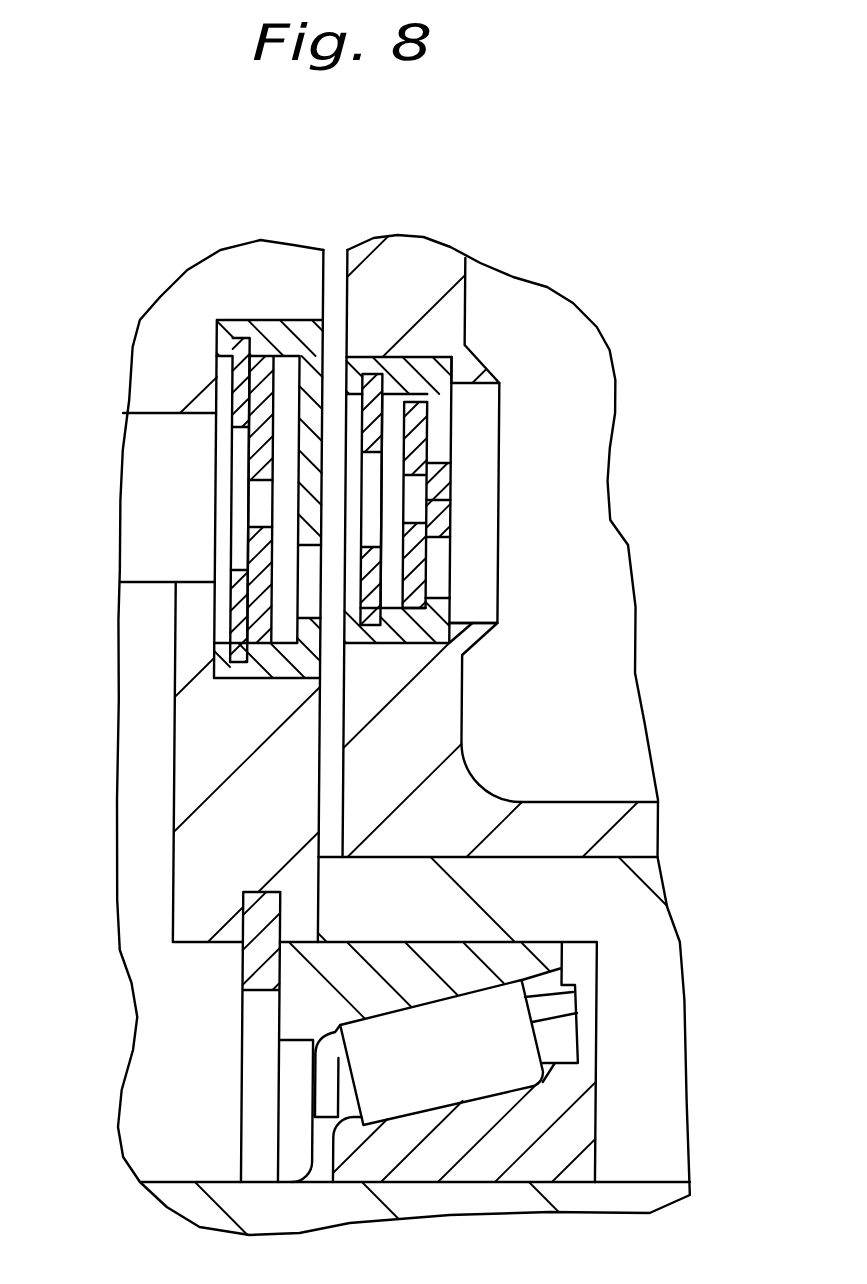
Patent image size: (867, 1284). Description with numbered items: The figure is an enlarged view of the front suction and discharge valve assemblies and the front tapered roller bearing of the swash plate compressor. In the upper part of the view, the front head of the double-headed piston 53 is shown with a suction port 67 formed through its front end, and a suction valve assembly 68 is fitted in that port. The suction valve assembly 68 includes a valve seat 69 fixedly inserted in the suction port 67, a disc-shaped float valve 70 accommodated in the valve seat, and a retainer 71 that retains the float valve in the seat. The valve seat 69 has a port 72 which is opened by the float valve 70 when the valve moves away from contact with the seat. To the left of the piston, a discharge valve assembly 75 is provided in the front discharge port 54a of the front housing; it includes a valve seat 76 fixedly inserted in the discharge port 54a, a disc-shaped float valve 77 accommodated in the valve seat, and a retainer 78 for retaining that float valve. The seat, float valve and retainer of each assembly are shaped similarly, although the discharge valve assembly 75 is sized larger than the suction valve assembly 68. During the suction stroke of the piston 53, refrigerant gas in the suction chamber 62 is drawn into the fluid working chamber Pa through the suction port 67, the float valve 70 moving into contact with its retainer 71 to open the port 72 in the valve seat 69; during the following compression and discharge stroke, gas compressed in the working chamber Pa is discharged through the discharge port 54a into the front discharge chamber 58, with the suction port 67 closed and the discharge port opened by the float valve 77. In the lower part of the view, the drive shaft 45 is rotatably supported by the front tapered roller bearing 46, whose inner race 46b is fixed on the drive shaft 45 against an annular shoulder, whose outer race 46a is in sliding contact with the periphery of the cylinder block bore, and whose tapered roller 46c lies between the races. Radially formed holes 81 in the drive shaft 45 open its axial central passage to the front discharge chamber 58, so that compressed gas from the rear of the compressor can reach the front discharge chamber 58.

The fluid working chamber Pa is at (335, 262).
The discharge valve assembly 75 is at (245, 322).
The valve seat 76 is at (220, 337).
The retainer 78 is at (237, 382).
The discharge port 54a is at (245, 465).
The float valve 77 is at (260, 633).
The suction valve assembly 68 is at (446, 357).
The suction port 67 is at (485, 408).
The float valve 70 is at (401, 613).
The retainer 71 is at (378, 640).
The valve seat 69 is at (441, 508).
The port 72 is at (440, 440).
The suction chamber 62 is at (574, 748).
The double-headed piston 53 is at (664, 829).
The front discharge chamber 58 is at (202, 1126).
The outer race 46a is at (298, 1018).
The front tapered roller bearing 46 is at (601, 1095).
The tapered roller 46c is at (519, 1048).
The inner race 46b is at (586, 1136).
The holes 81 is at (675, 1184).
The drive shaft 45 is at (179, 1197).